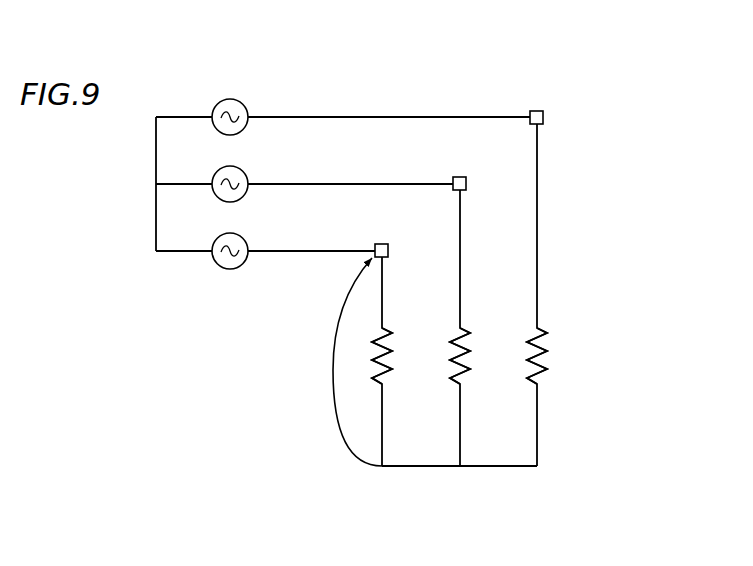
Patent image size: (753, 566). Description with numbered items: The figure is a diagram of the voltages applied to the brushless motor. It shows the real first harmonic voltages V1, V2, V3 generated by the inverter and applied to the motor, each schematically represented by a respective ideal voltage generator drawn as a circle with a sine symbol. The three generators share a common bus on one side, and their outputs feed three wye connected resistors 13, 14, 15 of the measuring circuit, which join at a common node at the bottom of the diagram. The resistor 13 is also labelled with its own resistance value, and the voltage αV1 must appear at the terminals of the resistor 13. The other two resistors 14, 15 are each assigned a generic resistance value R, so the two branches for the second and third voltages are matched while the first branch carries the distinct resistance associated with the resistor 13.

The first harmonic voltage V1 is at (215, 263).
The first harmonic voltage V2 is at (213, 191).
The first harmonic voltage V3 is at (220, 102).
The resistor 13 is at (394, 380).
The resistor 14 is at (468, 379).
The resistor 15 is at (559, 364).
The generic resistance value R is at (483, 330).